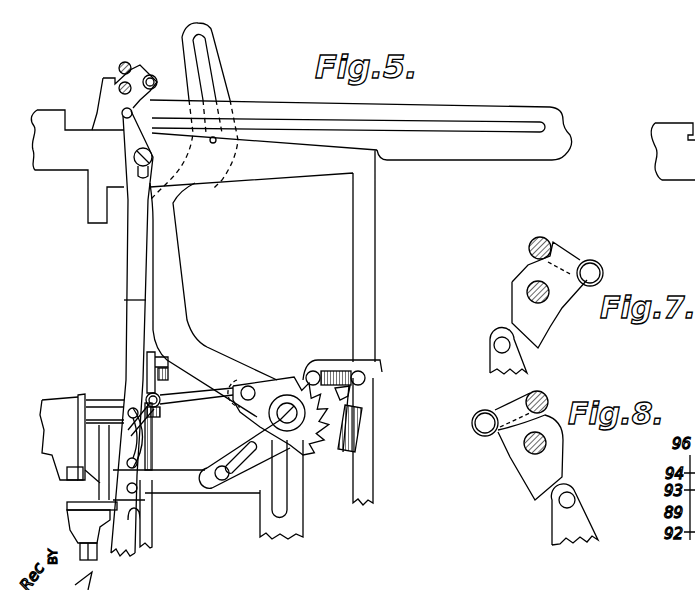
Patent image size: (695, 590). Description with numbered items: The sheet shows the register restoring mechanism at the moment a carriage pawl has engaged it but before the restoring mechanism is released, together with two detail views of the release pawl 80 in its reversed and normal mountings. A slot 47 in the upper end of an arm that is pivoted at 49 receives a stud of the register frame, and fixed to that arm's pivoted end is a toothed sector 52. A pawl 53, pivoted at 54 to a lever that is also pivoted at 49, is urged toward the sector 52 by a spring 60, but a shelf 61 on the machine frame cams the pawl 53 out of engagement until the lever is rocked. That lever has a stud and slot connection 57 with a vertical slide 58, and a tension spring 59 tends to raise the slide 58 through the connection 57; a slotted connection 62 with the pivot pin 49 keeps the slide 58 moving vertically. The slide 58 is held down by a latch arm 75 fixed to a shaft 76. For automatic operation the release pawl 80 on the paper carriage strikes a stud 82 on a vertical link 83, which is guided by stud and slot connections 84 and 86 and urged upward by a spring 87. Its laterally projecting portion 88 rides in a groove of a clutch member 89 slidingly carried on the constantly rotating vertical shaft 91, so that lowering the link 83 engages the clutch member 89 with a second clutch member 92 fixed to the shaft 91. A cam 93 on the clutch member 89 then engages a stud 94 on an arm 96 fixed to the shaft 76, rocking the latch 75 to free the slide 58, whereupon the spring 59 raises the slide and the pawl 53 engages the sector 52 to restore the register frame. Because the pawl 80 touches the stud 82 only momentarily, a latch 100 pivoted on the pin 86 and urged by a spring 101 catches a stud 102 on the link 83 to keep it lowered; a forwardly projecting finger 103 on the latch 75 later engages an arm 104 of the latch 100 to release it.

In FIG. 5, the slot 47 is at (206, 101).
In FIG. 5, the pivot 49 is at (287, 403).
In FIG. 5, the toothed sector 52 is at (317, 433).
In FIG. 5, the pawl 53 is at (344, 398).
In FIG. 5, the pivot 54 is at (348, 386).
In FIG. 5, the stud and slot connection 57 is at (223, 467).
In FIG. 5, the vertical slide 58 is at (262, 492).
In FIG. 5, the tension spring 59 is at (358, 440).
In FIG. 5, the spring 60 is at (331, 372).
In FIG. 5, the shelf 61 is at (317, 368).
In FIG. 5, the slotted connection 62 is at (290, 503).
In FIG. 5, the latch arm 75 is at (140, 467).
In FIG. 5, the shaft 76 is at (92, 403).
In FIG. 5, the release pawl 80 is at (133, 77).
In FIG. 7, the release pawl 80 is at (528, 308).
In FIG. 8, the release pawl 80 is at (545, 462).
In FIG. 5, the stud 82 is at (123, 116).
In FIG. 7, the stud 82 is at (502, 345).
In FIG. 8, the stud 82 is at (570, 500).
In FIG. 7, the vertical link 83 is at (493, 367).
In FIG. 8, the vertical link 83 is at (578, 520).
In FIG. 5, the stud and slot connection 84 is at (147, 158).
In FIG. 5, the stud and slot connection 86 is at (130, 408).
In FIG. 5, the spring 87 is at (128, 432).
In FIG. 5, the laterally projecting portion 88 is at (145, 518).
In FIG. 5, the clutch member 89 is at (80, 512).
In FIG. 5, the vertical shaft 91 is at (97, 552).
In FIG. 5, the clutch member 92 is at (83, 528).
In FIG. 5, the cam 93 is at (90, 483).
In FIG. 5, the stud 94 is at (67, 472).
In FIG. 5, the arm 96 is at (70, 448).
In FIG. 5, the latch 100 is at (138, 445).
In FIG. 5, the spring 101 is at (162, 404).
In FIG. 5, the stud 102 is at (140, 483).
In FIG. 5, the forwardly projecting finger 103 is at (152, 420).
In FIG. 5, the arm 104 is at (160, 401).